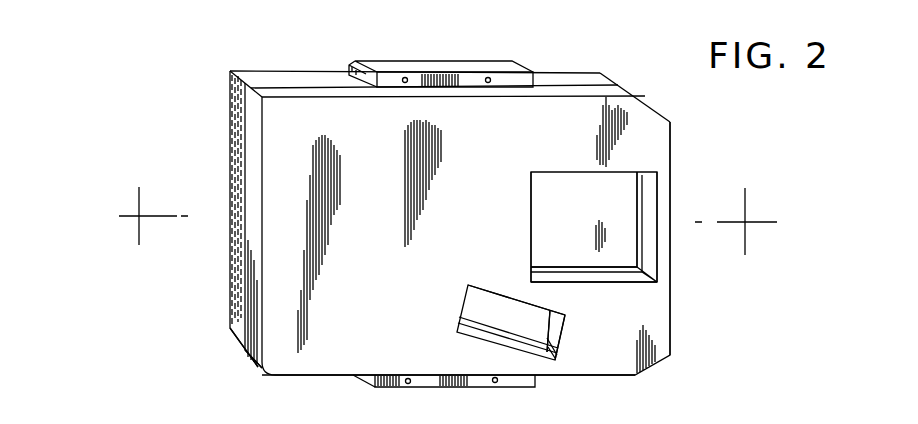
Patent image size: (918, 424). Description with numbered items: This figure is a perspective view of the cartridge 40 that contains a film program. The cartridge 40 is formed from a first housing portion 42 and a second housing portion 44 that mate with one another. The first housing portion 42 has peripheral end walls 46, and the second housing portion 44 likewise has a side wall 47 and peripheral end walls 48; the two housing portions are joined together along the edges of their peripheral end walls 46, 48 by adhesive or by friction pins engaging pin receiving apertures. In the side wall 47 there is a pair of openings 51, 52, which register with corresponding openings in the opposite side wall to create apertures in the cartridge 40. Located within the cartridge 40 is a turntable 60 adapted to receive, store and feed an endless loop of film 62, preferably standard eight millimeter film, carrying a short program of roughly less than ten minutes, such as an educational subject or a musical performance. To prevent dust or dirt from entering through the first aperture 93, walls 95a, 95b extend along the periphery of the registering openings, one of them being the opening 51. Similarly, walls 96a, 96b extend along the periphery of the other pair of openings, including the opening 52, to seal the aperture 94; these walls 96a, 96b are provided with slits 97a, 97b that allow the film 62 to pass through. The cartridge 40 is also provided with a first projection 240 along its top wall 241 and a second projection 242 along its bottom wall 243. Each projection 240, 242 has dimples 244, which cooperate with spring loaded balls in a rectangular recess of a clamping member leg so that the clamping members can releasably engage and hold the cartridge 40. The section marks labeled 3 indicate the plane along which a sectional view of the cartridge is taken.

The cartridge 40 is at (220, 152).
The first housing portion 42 is at (260, 70).
The peripheral end walls 46 is at (295, 74).
The top wall 241 is at (323, 82).
The peripheral end walls 48 is at (613, 87).
The side wall 47 is at (653, 118).
The second housing portion 44 is at (273, 337).
The first projection 240 is at (423, 58).
The dimples 244 is at (490, 78).
The second projection 242 is at (522, 385).
The bottom wall 243 is at (357, 376).
The turntable 60 is at (422, 399).
The opening 51 is at (561, 185).
The first aperture 93 is at (531, 197).
The film 62 is at (640, 203).
The wall 95a is at (577, 275).
The wall 95b is at (610, 278).
The opening 52 is at (490, 297).
The aperture 94 is at (470, 293).
The wall 96a is at (462, 318).
The wall 96b is at (483, 335).
The slit 97a is at (562, 333).
The slit 97b is at (560, 348).
The section line 3- 3 is at (142, 219).